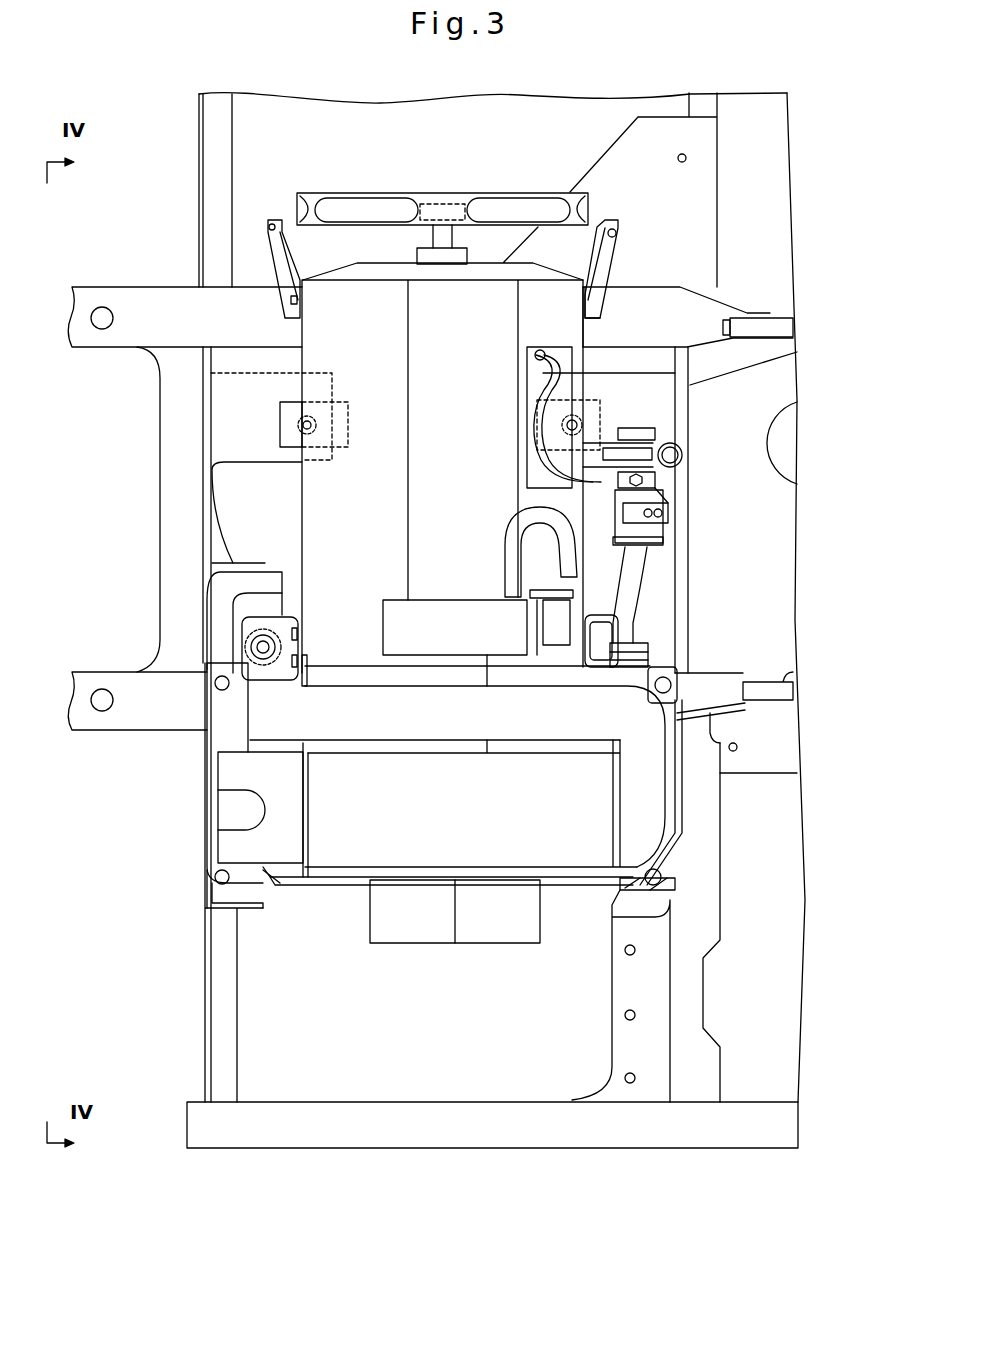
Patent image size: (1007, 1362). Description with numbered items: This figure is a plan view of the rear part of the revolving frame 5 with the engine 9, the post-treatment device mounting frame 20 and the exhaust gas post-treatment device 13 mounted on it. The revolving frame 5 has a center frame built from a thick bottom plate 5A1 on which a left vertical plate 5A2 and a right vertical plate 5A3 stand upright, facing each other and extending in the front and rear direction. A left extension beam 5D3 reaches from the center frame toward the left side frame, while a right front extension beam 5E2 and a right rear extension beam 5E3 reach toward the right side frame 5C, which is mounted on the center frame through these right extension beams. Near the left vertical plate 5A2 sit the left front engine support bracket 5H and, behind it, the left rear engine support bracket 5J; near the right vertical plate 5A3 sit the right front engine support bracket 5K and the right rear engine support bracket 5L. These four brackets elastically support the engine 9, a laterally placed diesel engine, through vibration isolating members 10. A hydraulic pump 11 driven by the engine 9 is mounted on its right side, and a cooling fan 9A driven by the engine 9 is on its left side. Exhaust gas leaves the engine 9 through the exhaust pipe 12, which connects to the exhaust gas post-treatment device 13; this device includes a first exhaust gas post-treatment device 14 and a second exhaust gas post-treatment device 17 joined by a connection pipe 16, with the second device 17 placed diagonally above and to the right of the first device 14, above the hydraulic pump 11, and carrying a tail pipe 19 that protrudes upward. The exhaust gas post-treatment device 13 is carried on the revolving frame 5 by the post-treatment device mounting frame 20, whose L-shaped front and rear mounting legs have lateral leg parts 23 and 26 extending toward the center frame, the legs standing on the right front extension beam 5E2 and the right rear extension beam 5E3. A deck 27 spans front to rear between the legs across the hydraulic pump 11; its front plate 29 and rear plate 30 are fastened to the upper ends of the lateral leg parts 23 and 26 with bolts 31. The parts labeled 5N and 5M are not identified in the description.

The revolving frame 5 is at (460, 1152).
The right side frame 5C is at (320, 1120).
The left extension beam 5D3 is at (215, 165).
The right front extension beam 5E2 is at (690, 1067).
The right rear extension beam 5E3 is at (210, 994).
The left front engine support bracket 5H is at (703, 382).
The bottom plate 5A1 is at (720, 455).
The left vertical plate 5A2 is at (775, 325).
The right vertical plate 5A3 is at (765, 700).
The left rear engine support bracket 5J is at (245, 402).
The left upper bracket 5N is at (240, 563).
The right rear engine support bracket 5L is at (262, 592).
The hose 5M is at (655, 572).
The right front engine support bracket 5K is at (660, 600).
The engine 9 is at (400, 505).
The cooling fan 9A is at (371, 216).
The vibration isolating member 10 is at (285, 428).
The hydraulic pump 11 is at (424, 928).
The exhaust pipe 12 is at (663, 550).
The exhaust gas post-treatment device 13 is at (345, 880).
The first exhaust gas post-treatment device 14 is at (445, 680).
The connection pipe 16 is at (680, 775).
The second exhaust gas post-treatment device 17 is at (482, 835).
The tail pipe 19 is at (233, 810).
The post-treatment device mounting frame 20 is at (300, 890).
The lateral leg part 23 is at (660, 625).
The lateral leg part 26 is at (255, 615).
The deck 27 is at (297, 885).
The front plate 29 is at (668, 855).
The rear plate 30 is at (222, 745).
The bolt 31 is at (262, 877).